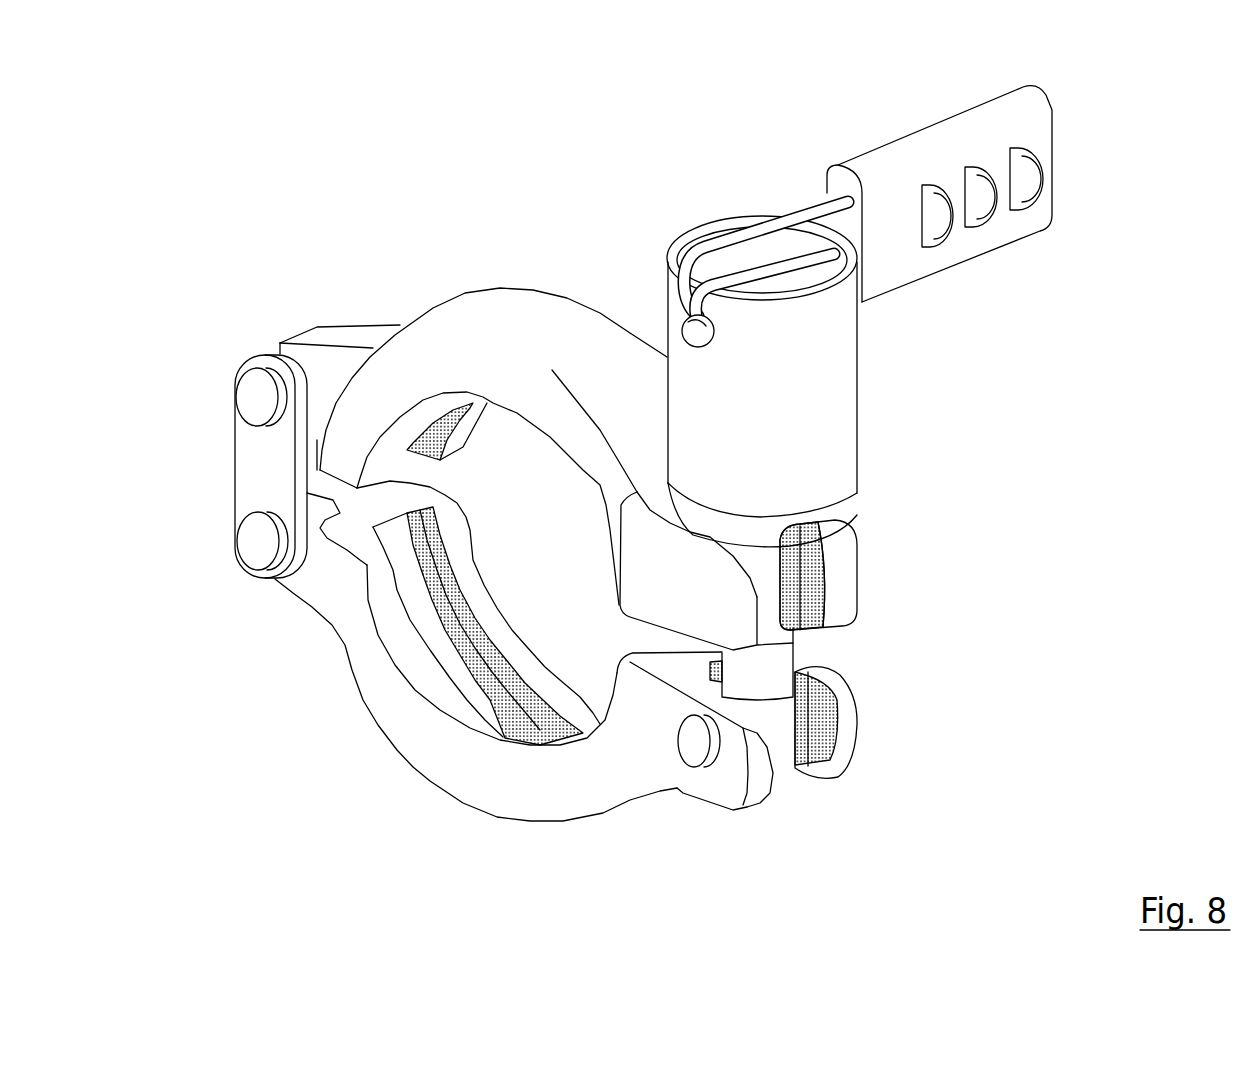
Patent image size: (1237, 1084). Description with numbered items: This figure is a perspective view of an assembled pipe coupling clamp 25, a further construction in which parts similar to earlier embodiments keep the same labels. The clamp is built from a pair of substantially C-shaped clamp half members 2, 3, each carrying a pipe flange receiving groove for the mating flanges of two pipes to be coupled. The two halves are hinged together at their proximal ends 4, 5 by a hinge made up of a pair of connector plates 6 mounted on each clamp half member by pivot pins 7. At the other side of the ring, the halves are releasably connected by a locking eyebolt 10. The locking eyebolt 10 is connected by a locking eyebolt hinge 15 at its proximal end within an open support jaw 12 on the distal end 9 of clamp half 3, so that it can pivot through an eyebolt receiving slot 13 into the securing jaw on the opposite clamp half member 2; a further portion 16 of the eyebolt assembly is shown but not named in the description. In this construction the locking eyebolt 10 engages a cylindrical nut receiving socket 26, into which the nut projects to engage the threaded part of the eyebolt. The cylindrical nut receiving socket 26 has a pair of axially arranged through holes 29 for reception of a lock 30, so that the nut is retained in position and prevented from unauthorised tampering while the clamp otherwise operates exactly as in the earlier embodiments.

The clamp half member 2 is at (447, 340).
The clamp half member 3 is at (445, 773).
The proximal end 4 is at (340, 340).
The proximal end 5 is at (337, 598).
The connector plate 6 is at (257, 468).
The pivot pin 7 is at (257, 400).
The distal end 9 is at (697, 793).
The locking eyebolt 10 is at (854, 620).
The open support jaw 12 is at (823, 743).
The eyebolt receiving slot 13 is at (817, 540).
The locking eyebolt hinge 15 is at (703, 743).
The bolt shank 16 is at (767, 663).
The pipe coupling clamp 25 is at (873, 309).
The cylindrical nut receiving socket 26 is at (823, 403).
The through holes 29 is at (700, 333).
The lock 30 is at (1023, 117).